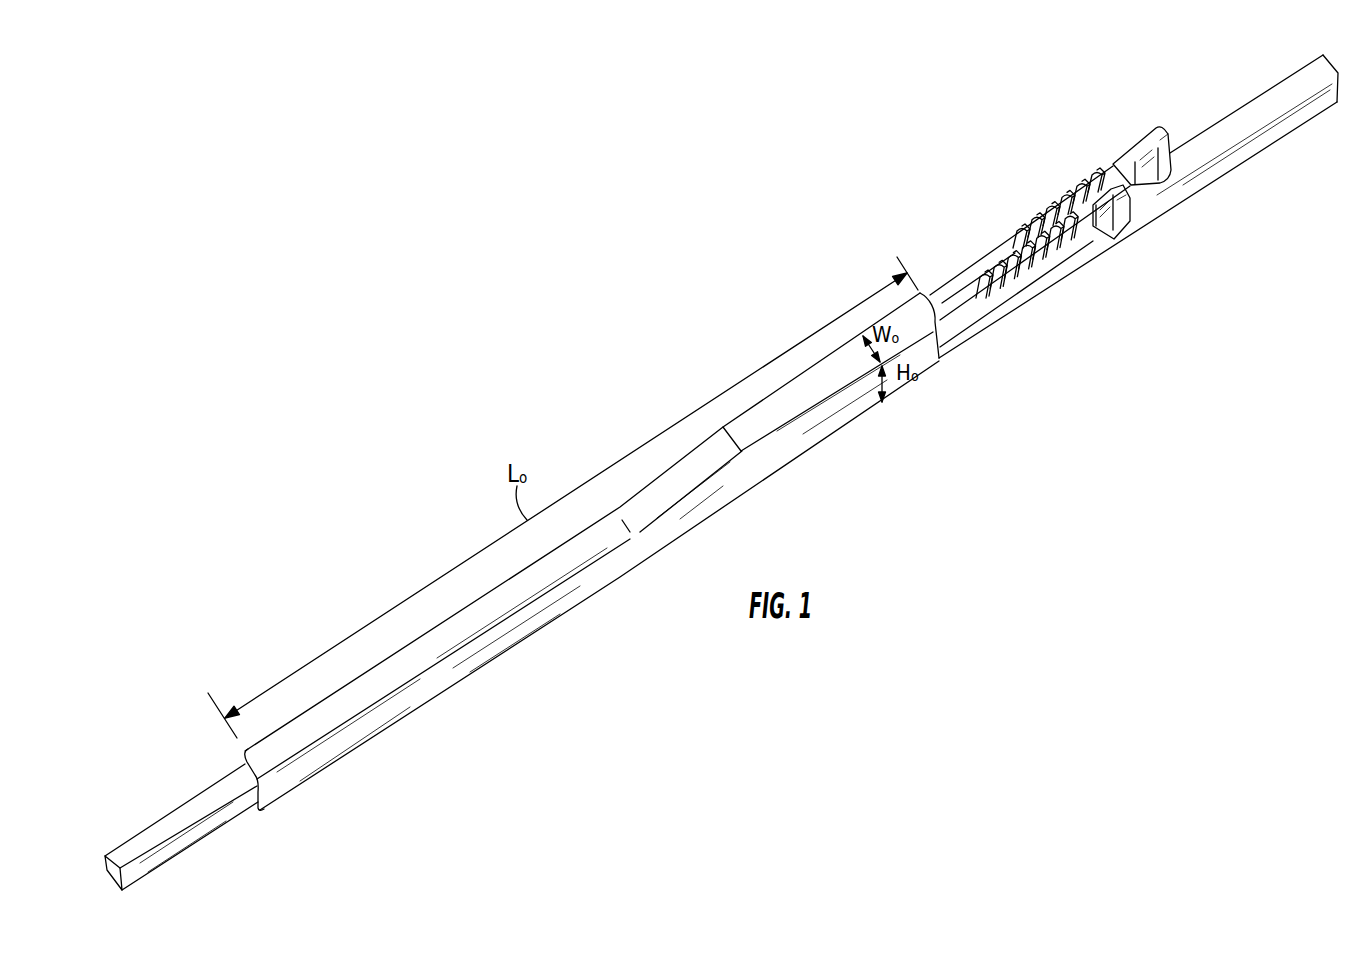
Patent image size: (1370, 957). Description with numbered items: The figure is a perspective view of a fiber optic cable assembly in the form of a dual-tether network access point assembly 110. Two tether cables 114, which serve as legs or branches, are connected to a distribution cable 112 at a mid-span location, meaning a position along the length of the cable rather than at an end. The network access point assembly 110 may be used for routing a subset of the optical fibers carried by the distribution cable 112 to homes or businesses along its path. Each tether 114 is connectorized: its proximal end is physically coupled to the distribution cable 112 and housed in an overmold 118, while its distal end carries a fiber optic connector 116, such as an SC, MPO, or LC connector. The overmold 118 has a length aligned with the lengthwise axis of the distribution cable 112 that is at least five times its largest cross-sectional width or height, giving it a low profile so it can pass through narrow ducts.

The dual-tether network access point assembly 110 is at (748, 268).
The distribution cable 112 is at (192, 812).
The tether cable 114 is at (965, 282).
The fiber optic connector 116 is at (1145, 150).
The overmold 118 is at (828, 427).